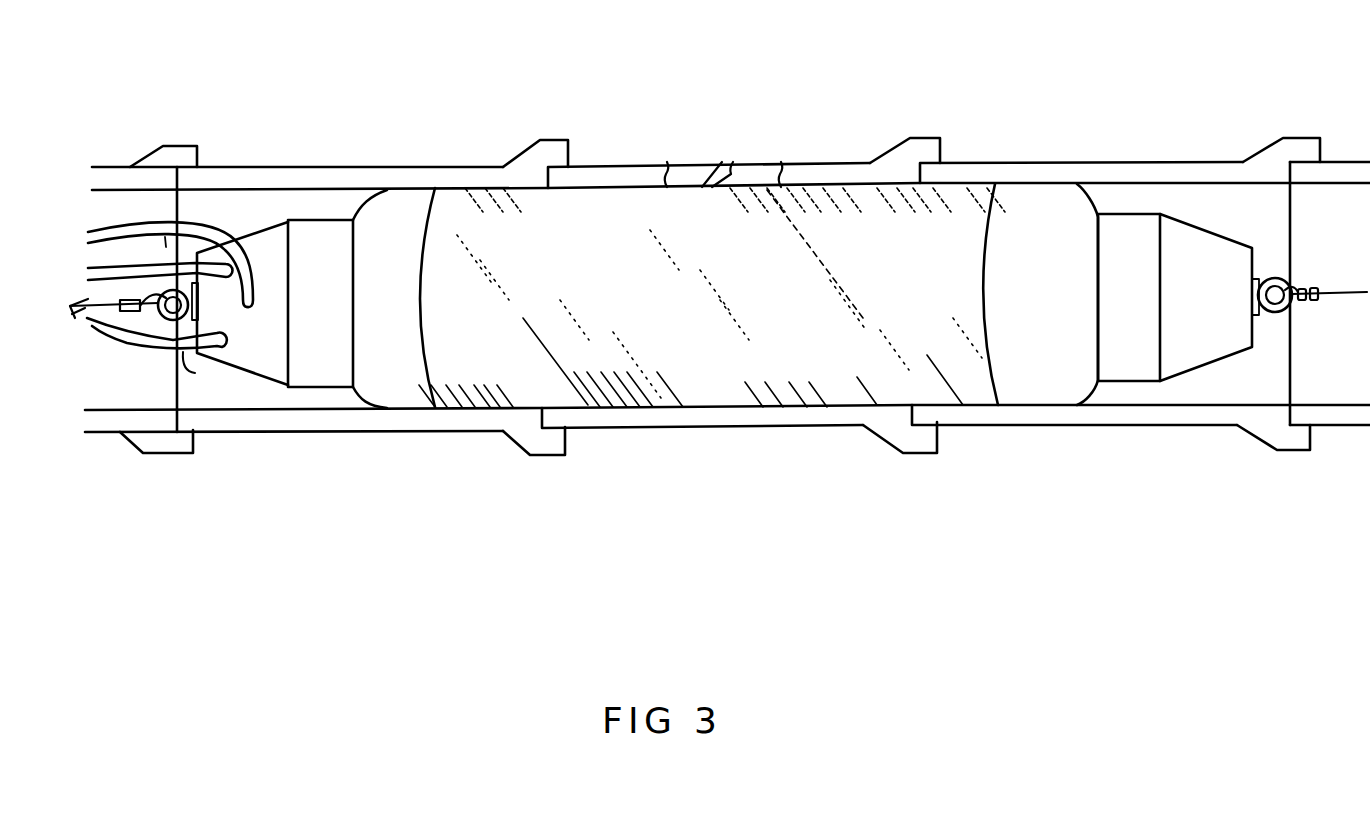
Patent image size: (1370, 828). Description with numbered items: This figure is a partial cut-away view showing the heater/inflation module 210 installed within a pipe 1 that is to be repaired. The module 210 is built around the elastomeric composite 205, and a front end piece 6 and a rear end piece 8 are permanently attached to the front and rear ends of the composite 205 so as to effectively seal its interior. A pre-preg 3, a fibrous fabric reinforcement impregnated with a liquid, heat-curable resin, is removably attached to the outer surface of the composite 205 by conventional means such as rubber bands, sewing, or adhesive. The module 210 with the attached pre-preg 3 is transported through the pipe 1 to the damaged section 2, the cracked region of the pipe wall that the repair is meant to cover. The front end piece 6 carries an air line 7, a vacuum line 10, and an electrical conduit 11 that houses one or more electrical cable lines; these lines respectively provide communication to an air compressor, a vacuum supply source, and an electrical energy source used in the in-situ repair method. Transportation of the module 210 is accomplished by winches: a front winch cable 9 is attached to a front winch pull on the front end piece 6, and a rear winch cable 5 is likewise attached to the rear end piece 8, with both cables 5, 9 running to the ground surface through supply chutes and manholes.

The pipe 1 is at (1147, 167).
The damaged section 2 is at (670, 162).
The pre-preg 3 is at (920, 262).
The rear winch cable 5 is at (1348, 288).
The front end piece 6 is at (262, 260).
The air line 7 is at (123, 263).
The rear end piece 8 is at (1202, 243).
The front winch cable 9 is at (110, 315).
The vacuum line 10 is at (207, 230).
The electrical conduit 11 is at (157, 360).
The elastomeric composite 205 is at (390, 233).
The heater/inflation module 210 is at (338, 206).